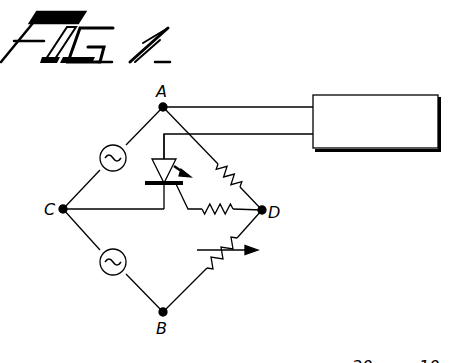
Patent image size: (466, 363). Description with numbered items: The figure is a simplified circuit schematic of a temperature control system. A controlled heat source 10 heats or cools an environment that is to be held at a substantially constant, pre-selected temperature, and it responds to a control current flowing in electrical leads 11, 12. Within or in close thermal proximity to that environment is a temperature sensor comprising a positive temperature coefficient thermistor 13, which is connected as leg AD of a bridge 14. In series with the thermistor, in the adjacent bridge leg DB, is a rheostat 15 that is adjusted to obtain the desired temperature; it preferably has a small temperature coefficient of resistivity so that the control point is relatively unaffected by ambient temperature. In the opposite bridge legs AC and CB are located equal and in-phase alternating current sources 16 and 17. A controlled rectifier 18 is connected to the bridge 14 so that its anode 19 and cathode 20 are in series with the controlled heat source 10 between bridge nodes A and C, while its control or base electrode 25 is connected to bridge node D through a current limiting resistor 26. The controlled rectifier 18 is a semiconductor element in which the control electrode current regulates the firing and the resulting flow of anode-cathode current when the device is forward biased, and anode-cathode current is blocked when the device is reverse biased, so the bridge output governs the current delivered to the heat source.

The controlled heat source 10 is at (413, 95).
The electrical lead 11 is at (212, 107).
The electrical lead 12 is at (227, 134).
The positive temperature coefficient thermistor 13 is at (241, 187).
The bridge 14 is at (268, 234).
The rheostat 15 is at (213, 263).
The alternating current source 16 is at (104, 147).
The alternating current source 17 is at (103, 270).
The controlled rectifier 18 is at (190, 177).
The anode 19 is at (163, 152).
The cathode 20 is at (163, 193).
The control electrode 25 is at (182, 199).
The current limiting resistor 26 is at (217, 210).